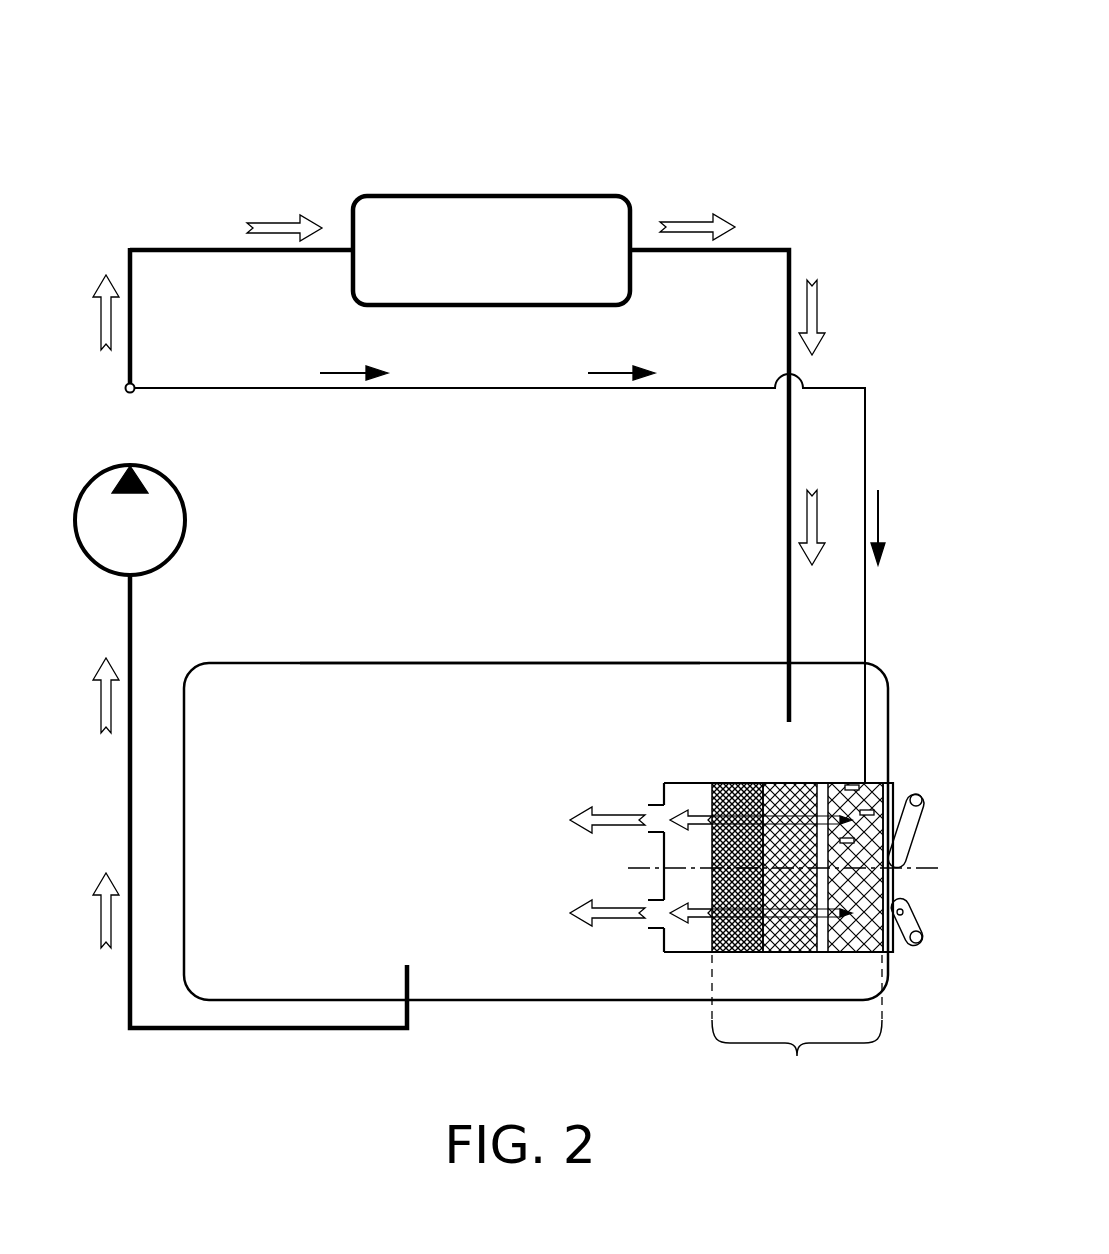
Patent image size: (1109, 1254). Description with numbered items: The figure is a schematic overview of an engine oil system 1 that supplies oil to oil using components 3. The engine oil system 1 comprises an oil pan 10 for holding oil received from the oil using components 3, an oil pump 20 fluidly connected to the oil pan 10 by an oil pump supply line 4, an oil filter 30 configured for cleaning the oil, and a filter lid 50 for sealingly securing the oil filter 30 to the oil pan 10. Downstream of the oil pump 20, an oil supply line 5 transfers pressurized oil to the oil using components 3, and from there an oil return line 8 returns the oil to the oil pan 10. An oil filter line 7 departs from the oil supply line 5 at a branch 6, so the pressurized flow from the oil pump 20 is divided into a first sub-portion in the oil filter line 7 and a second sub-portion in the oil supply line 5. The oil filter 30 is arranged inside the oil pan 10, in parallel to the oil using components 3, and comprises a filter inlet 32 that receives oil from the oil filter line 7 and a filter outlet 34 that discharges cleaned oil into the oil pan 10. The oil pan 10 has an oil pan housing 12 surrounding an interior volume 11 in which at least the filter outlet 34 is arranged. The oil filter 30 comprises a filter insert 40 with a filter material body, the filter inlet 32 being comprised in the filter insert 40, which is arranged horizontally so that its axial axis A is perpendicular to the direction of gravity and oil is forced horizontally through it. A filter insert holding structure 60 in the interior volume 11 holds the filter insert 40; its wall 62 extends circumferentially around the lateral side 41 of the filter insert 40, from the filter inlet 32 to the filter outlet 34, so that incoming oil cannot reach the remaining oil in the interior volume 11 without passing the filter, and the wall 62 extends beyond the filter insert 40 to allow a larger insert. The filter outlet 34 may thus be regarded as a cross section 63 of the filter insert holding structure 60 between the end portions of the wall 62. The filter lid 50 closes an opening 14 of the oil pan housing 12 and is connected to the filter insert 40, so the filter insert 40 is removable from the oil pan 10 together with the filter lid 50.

The engine oil system 1 is at (285, 70).
The oil using components 3 is at (493, 196).
The oil pump supply line 4 is at (128, 792).
The oil supply line 5 is at (130, 256).
The branch 6 is at (124, 388).
The oil filter line 7 is at (488, 390).
The oil return line 8 is at (792, 262).
The oil pan 10 is at (428, 635).
The interior volume 11 is at (441, 823).
The oil pan housing 12 is at (535, 663).
The opening 14 is at (915, 768).
The oil pump 20 is at (104, 466).
The oil filter 30 is at (712, 738).
The filter inlet 32 is at (897, 783).
The filter outlet 34 is at (690, 940).
The filter insert 40 is at (780, 770).
The lateral side 41 is at (797, 1024).
The filter lid 50 is at (938, 968).
The filter insert holding structure 60 is at (741, 1022).
The wall 62 is at (682, 978).
The cross section 63 is at (660, 913).
The axial axis A is at (797, 868).